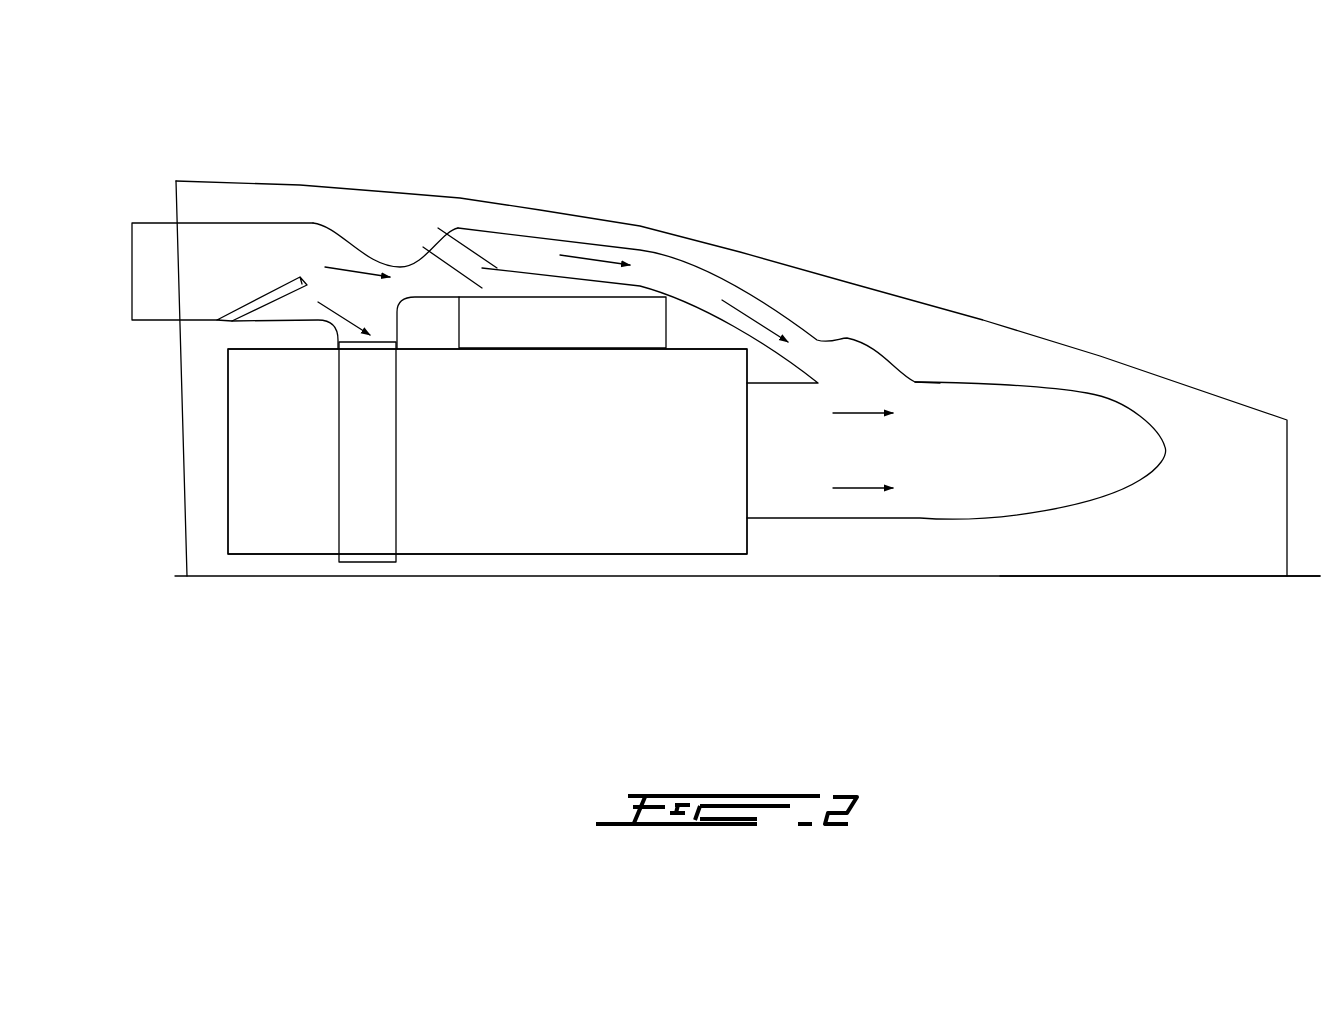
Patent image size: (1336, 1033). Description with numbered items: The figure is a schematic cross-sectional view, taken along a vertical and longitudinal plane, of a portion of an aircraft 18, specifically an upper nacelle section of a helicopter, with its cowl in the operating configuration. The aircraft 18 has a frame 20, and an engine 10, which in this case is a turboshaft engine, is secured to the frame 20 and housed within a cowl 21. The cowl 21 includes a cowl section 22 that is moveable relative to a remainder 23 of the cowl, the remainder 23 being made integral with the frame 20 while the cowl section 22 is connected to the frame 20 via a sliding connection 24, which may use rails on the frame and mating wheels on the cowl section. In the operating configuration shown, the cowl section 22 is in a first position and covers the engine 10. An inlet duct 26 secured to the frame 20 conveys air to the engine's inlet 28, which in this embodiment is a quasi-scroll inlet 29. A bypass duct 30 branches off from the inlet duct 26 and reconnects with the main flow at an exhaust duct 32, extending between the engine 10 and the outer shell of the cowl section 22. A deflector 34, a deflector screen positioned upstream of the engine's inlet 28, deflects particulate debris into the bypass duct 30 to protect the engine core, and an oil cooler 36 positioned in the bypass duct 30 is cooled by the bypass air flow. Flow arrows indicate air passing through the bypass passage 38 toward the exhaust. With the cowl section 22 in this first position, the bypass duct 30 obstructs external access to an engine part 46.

The engine 10 is at (530, 556).
The aircraft 18 is at (927, 251).
The frame 20 is at (975, 562).
The cowl 21 is at (963, 311).
The cowl section 22 is at (1018, 325).
The remainder of the cowl 23 is at (176, 181).
The sliding connection 24 is at (1095, 577).
The inlet duct 26 is at (268, 223).
The engine's inlet 28 is at (362, 520).
The quasi-scroll inlet 29 is at (362, 465).
The bypass duct 30 is at (401, 262).
The exhaust duct 32 is at (1087, 393).
The deflector 34 is at (302, 277).
The oil cooler 36 is at (468, 250).
The bypass duct 38 is at (802, 280).
The engine part 46 is at (585, 298).